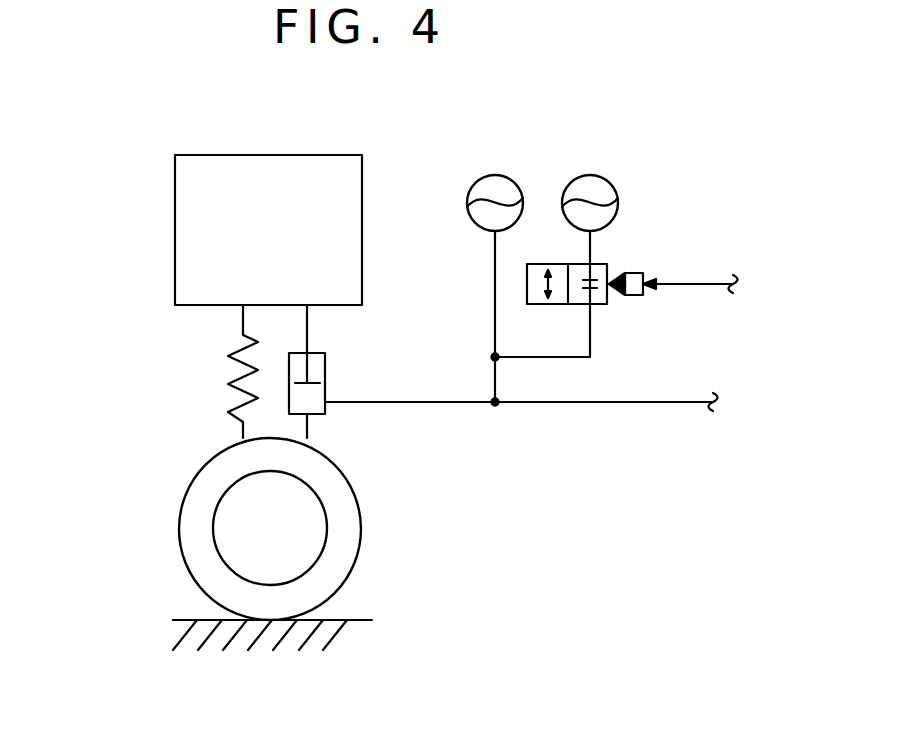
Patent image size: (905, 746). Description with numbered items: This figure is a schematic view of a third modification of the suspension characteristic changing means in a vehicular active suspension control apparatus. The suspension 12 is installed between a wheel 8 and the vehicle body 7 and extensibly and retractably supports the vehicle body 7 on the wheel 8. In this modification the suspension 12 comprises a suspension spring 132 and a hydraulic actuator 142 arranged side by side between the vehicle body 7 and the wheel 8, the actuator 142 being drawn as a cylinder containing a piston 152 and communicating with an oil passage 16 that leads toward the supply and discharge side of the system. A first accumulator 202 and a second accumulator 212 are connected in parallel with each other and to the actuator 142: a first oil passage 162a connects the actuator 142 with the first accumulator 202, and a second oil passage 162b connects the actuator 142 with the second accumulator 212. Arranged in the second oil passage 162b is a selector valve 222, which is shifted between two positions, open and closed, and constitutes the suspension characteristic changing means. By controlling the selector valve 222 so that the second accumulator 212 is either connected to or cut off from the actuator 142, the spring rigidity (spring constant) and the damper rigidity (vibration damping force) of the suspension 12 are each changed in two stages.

The vehicle body 7 is at (175, 190).
The wheel 8 is at (192, 482).
The suspension 12 is at (150, 331).
The oil passage 16 is at (542, 404).
The suspension spring 132 is at (228, 370).
The hydraulic actuator 142 is at (312, 416).
The piston 152 is at (313, 393).
The first oil passage 162a is at (493, 284).
The second oil passage 162b is at (593, 248).
The first accumulator 202 is at (500, 175).
The second accumulator 212 is at (594, 175).
The selector valve 222 is at (604, 263).